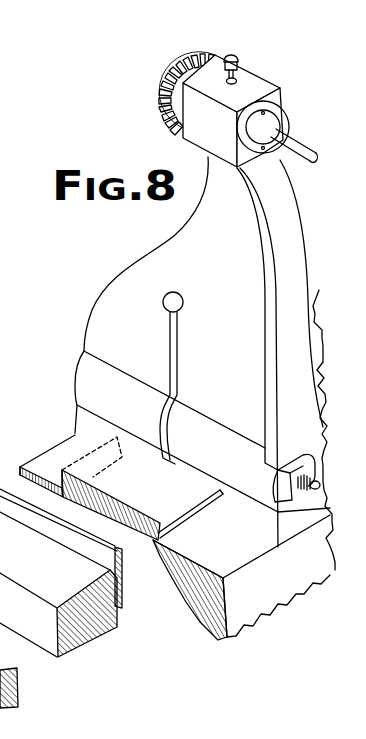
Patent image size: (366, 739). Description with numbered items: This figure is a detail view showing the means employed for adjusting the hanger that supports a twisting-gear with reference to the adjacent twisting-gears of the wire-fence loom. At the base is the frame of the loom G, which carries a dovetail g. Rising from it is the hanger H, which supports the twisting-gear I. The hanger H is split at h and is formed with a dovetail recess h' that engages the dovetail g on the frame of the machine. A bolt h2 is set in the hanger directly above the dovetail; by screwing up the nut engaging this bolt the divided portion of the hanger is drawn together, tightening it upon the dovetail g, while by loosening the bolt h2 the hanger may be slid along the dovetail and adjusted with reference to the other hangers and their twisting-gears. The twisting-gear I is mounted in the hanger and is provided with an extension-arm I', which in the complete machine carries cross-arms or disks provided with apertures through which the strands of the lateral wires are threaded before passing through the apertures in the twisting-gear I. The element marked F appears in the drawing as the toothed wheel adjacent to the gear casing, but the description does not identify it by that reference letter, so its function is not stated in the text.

The twisting-gear I is at (233, 94).
The extension-arm I' is at (287, 136).
The worm gear F is at (170, 118).
The hanger H is at (235, 323).
The split h is at (185, 378).
The dovetail recess h' is at (199, 514).
The bolt h2 is at (313, 490).
The dovetail g is at (90, 487).
The frame of the loom G is at (241, 577).